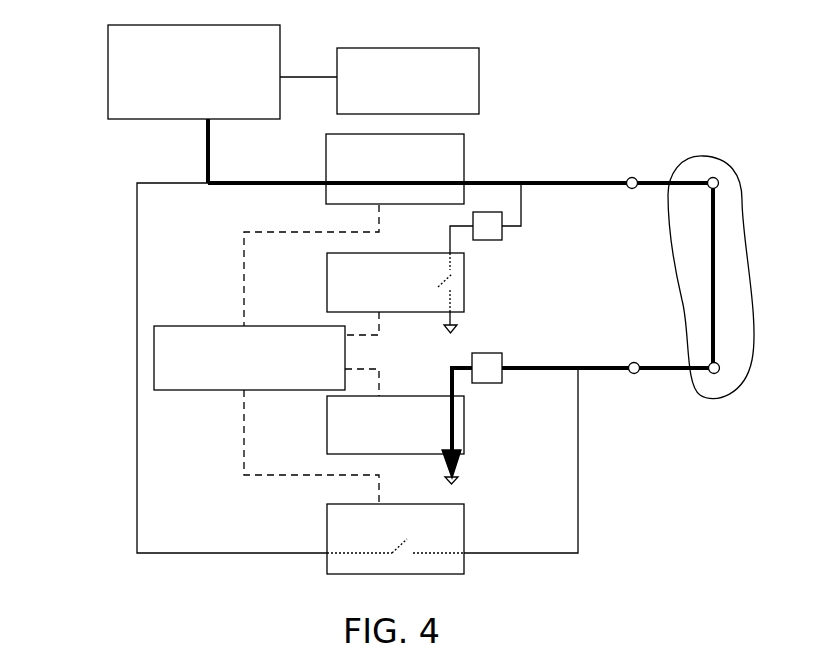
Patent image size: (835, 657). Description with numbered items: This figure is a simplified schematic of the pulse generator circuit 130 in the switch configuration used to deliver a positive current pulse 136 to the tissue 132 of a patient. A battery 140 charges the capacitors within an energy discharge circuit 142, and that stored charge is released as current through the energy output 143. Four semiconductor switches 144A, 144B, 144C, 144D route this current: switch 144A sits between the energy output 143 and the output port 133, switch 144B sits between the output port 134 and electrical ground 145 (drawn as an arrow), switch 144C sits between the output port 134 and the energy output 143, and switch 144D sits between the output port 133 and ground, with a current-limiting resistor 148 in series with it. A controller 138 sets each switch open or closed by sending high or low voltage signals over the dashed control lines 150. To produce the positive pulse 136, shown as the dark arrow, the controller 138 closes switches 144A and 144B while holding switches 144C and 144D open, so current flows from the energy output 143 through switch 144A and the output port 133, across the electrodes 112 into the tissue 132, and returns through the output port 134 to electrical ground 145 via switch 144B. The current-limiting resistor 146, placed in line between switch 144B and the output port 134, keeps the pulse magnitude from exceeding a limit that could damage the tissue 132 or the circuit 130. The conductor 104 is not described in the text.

The conductor 104 is at (666, 181).
The electrodes 112 is at (714, 177).
The pulse generator circuit 130 is at (657, 91).
The tissue 132 is at (742, 266).
The output port 133 is at (631, 177).
The output port 134 is at (634, 362).
The positive current pulse 136 is at (716, 222).
The controller 138 is at (205, 326).
The battery 140 is at (480, 68).
The energy discharge circuit 142 is at (108, 55).
The energy output 143 is at (208, 126).
The switch 144A is at (464, 148).
The switch 144B is at (326, 426).
The switch 144C is at (326, 530).
The switch 144D is at (326, 274).
The electrical ground 145 is at (452, 327).
The current-limiting resistor 146 is at (490, 384).
The current-limiting resistor 148 is at (490, 241).
The control lines 150 is at (244, 231).